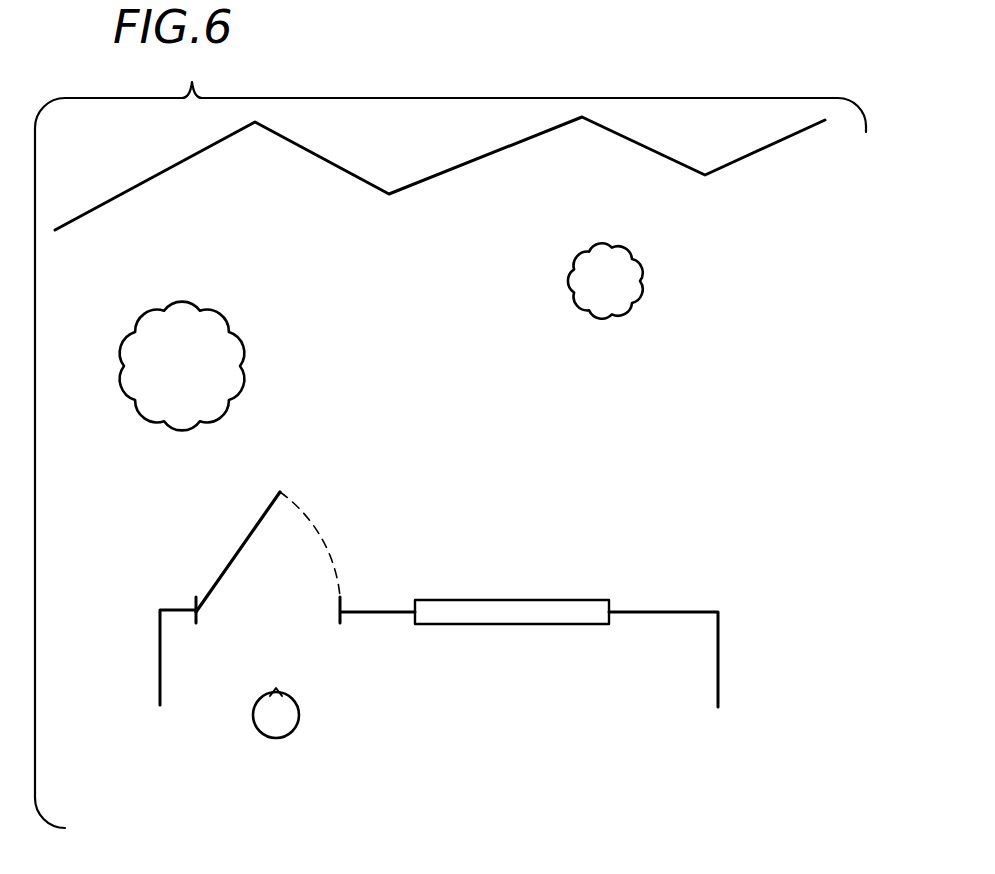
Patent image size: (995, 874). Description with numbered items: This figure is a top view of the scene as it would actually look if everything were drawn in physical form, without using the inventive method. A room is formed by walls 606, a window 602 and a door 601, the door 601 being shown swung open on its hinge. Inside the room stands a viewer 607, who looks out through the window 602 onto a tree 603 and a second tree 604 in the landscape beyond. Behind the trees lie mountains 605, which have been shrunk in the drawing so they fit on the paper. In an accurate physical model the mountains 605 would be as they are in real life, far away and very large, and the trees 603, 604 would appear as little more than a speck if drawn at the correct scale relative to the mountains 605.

The door 601 is at (235, 552).
The window 602 is at (580, 595).
The tree 603 is at (243, 352).
The tree 604 is at (645, 297).
The mountains 605 is at (330, 166).
The walls 606 is at (670, 613).
The viewer 607 is at (272, 738).